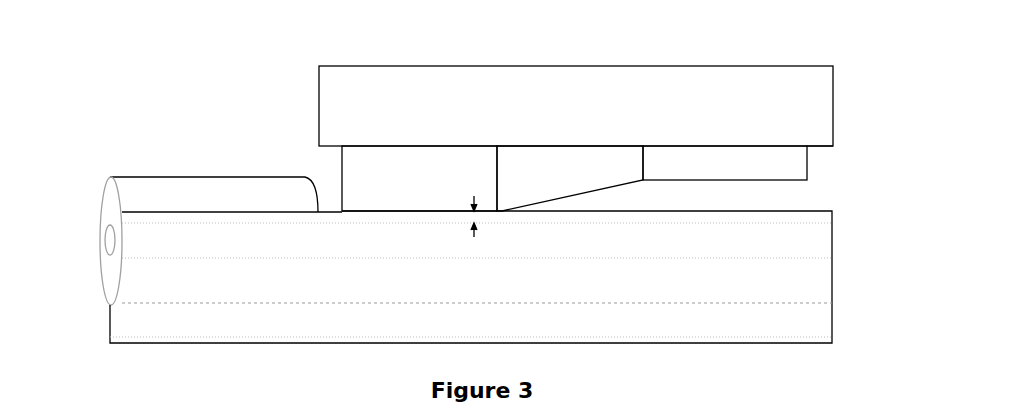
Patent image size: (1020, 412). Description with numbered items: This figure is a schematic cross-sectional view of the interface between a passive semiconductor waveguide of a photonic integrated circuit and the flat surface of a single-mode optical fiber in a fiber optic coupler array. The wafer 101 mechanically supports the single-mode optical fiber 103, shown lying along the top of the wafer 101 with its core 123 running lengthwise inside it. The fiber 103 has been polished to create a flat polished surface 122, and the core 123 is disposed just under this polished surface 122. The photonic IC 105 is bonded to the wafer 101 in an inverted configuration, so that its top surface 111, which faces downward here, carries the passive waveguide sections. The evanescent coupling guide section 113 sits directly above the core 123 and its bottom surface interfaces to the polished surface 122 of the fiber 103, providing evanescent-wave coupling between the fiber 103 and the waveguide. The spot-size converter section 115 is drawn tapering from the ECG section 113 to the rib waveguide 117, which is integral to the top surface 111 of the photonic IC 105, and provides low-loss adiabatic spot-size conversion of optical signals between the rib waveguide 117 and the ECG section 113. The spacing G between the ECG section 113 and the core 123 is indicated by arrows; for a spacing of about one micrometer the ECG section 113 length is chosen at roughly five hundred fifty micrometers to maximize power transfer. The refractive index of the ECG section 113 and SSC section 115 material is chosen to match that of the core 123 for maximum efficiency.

The wafer 101 is at (832, 327).
The single-mode optical fiber 103 is at (165, 178).
The photonic integrated circuit 105 is at (710, 77).
The top surface 111 is at (822, 146).
The evanescent coupling guide section 113 is at (419, 178).
The spot-size converter section 115 is at (570, 178).
The rib waveguide 117 is at (725, 163).
The polished surface 122 is at (797, 209).
The core 123 is at (103, 246).
The spacing G is at (482, 217).